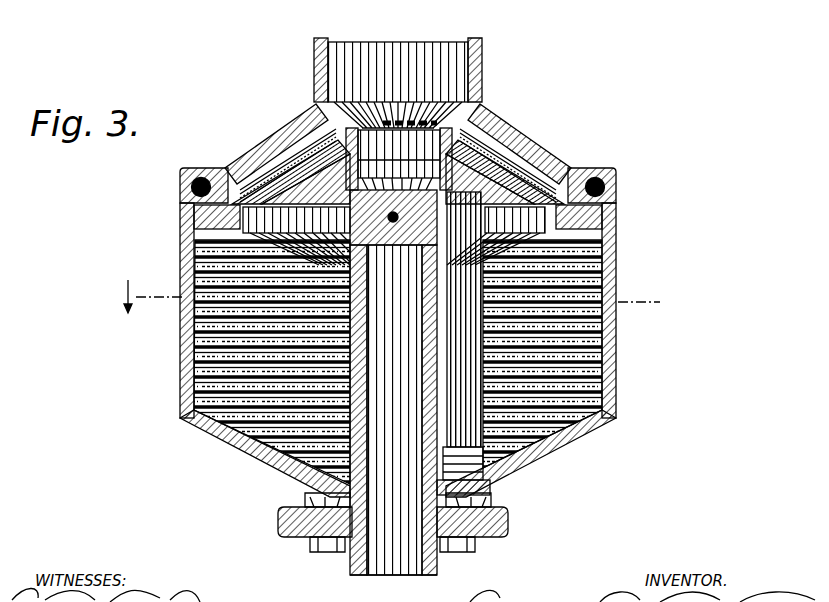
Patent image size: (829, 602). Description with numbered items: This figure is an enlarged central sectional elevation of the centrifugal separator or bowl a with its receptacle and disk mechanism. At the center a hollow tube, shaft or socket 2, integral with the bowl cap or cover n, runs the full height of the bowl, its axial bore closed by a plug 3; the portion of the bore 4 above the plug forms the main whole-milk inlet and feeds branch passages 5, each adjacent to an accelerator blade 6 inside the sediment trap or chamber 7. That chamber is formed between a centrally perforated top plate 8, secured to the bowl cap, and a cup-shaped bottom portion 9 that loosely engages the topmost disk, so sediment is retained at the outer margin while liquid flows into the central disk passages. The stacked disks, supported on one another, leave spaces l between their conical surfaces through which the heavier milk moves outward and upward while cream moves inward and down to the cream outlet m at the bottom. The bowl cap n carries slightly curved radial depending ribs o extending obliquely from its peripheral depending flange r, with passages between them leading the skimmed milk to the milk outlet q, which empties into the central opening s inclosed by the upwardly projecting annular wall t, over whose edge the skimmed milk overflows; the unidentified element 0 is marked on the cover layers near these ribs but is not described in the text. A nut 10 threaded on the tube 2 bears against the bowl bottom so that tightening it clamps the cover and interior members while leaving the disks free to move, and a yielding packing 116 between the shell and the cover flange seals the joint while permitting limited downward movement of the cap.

The main central or axial opening s is at (405, 57).
The upwardly projecting annular wall portion t is at (483, 62).
The branch passages 5 is at (240, 160).
The sediment trap or chamber 7 is at (567, 163).
The radial depending ribs o is at (287, 153).
The bowl cap or cover n is at (247, 153).
The top plate or cover 8 is at (517, 130).
The cover layer 0 is at (517, 150).
The centrifugal separator or bowl a is at (615, 107).
The milk outlet q is at (320, 108).
The yielding or compressible packing 116 is at (180, 187).
The accelerator blade 6 is at (585, 170).
The outer peripheral depending flange r is at (183, 207).
The bottom or cup portion 9 is at (613, 238).
The axial bore or opening 4 is at (470, 128).
The plug 3 is at (420, 260).
The central tube, shaft or socket 2 is at (352, 560).
The spaces l is at (608, 351).
The cream outlet m is at (300, 490).
The nut 10 is at (280, 530).